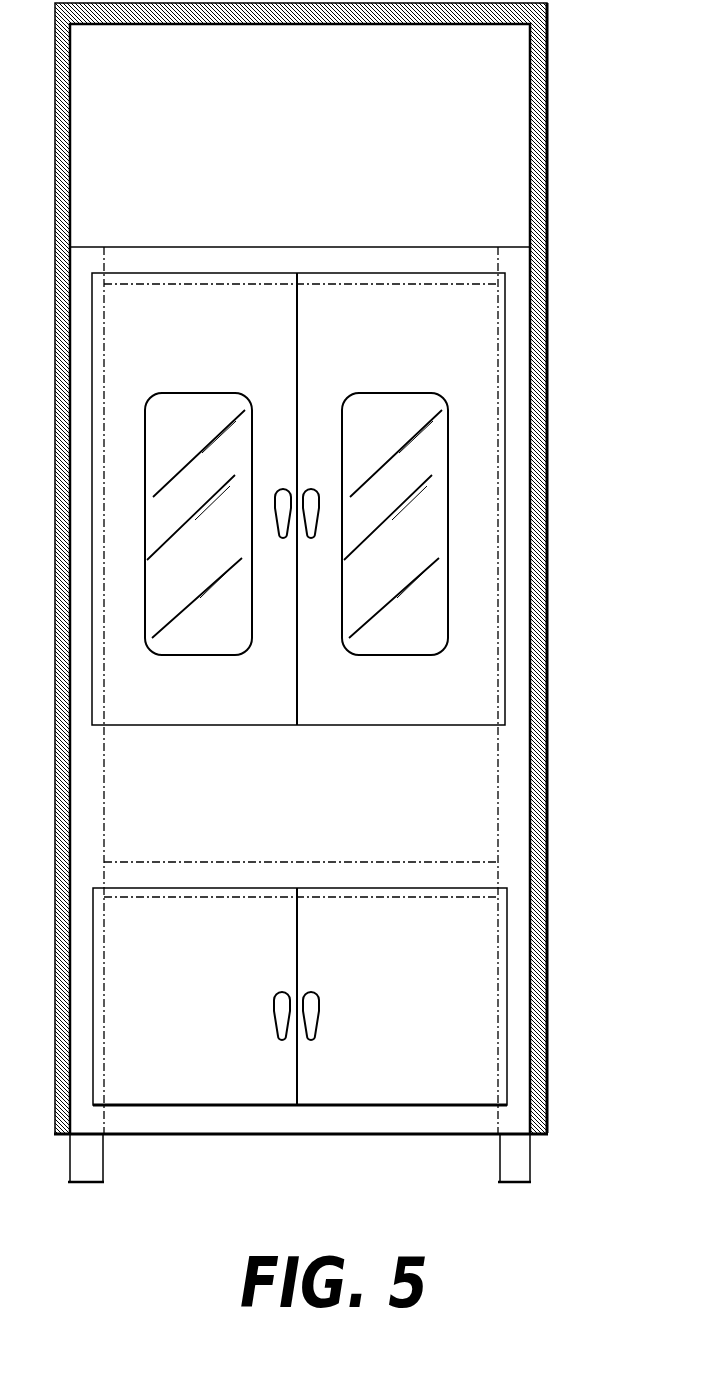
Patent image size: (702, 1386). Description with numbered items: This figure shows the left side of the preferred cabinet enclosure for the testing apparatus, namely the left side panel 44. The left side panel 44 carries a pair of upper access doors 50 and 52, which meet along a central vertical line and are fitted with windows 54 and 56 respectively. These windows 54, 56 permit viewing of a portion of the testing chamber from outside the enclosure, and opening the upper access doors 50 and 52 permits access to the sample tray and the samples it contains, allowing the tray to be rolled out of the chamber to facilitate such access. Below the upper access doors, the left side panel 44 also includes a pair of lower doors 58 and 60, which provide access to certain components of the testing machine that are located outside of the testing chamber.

The left side panel 44 is at (513, 809).
The upper access door 50 is at (163, 725).
The upper access door 52 is at (375, 725).
The window 54 is at (207, 648).
The window 56 is at (385, 405).
The lower door 58 is at (197, 995).
The lower door 60 is at (412, 996).